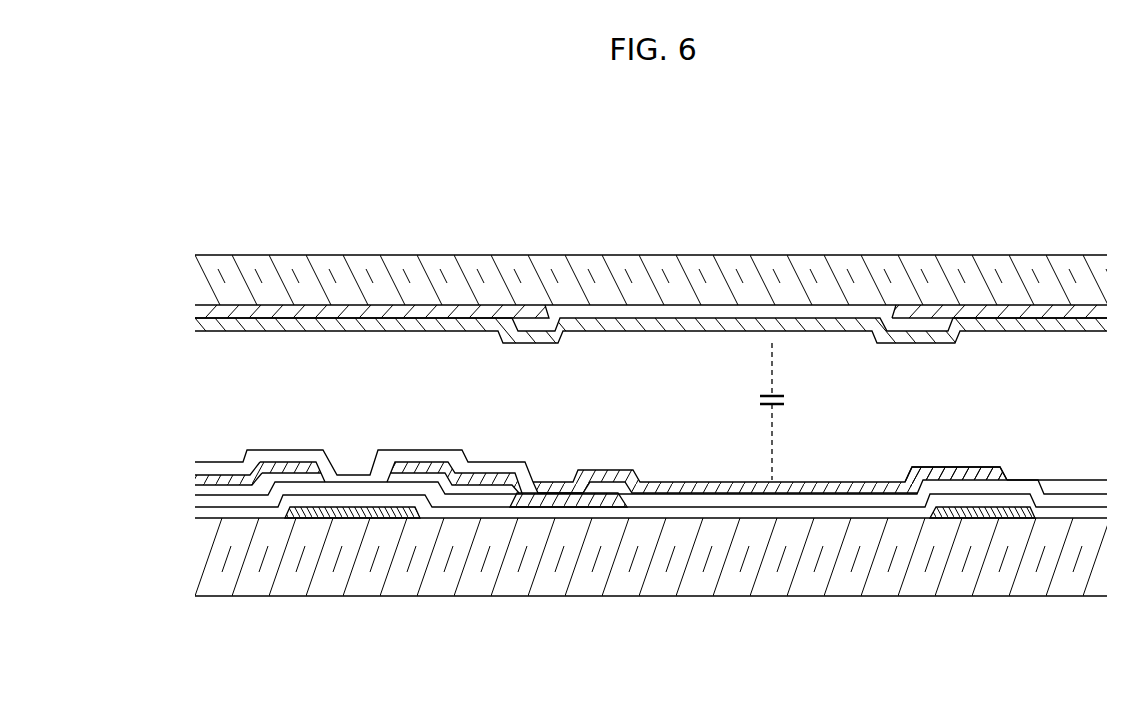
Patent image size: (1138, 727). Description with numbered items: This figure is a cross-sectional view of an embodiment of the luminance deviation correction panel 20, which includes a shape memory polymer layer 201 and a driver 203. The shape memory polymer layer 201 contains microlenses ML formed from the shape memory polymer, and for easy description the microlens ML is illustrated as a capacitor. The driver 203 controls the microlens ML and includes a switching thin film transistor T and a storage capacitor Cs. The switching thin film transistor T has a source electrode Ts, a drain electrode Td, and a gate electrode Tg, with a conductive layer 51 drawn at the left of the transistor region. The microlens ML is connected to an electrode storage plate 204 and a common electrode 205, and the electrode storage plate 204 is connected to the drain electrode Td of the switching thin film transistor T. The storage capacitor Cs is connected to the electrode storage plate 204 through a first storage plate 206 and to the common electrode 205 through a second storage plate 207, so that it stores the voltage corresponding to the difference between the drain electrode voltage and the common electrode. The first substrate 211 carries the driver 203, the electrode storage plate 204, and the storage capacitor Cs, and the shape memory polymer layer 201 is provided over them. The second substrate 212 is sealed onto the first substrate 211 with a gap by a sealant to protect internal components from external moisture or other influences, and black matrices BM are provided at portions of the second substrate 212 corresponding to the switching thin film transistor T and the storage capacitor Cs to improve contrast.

The luminance deviation correction panel 20 is at (626, 123).
The shape memory polymer layer 201 is at (667, 365).
The second substrate 212 is at (400, 272).
The black matrix BM is at (284, 313).
The common electrode 205 is at (1022, 326).
The microlens ML is at (808, 400).
The driver 203 is at (222, 415).
The first substrate 211 is at (604, 574).
The switching thin film transistor T is at (329, 553).
The gate electrode Tg is at (317, 510).
The data line 51 is at (195, 485).
The source electrode Ts is at (312, 463).
The drain electrode Td is at (464, 478).
The electrode storage plate 204 is at (772, 482).
The storage capacitor Cs is at (970, 573).
The first storage plate 206 is at (1003, 470).
The second storage plate 207 is at (962, 517).